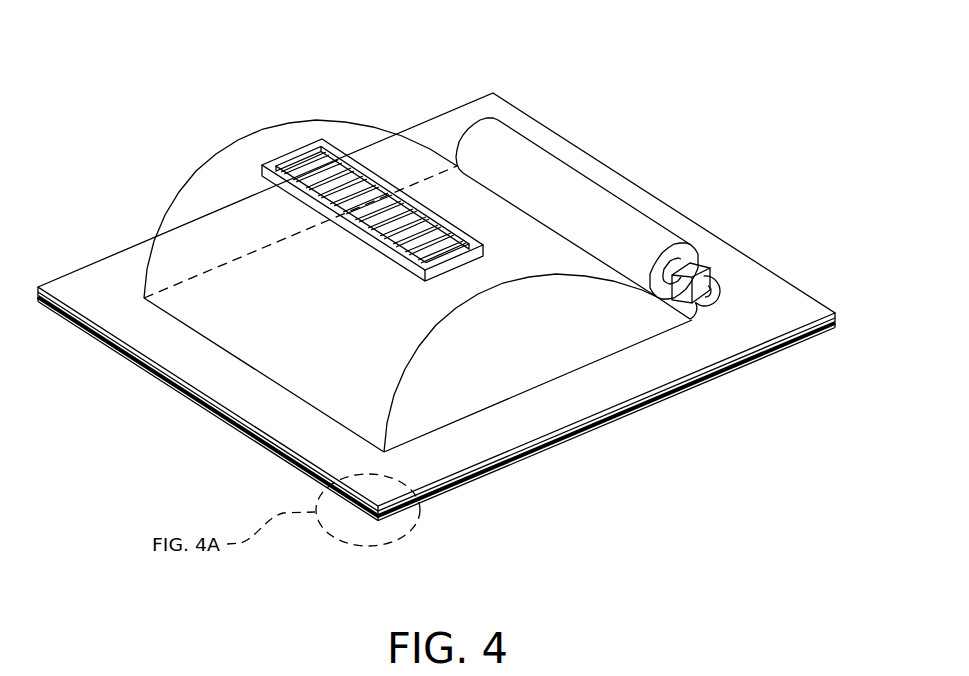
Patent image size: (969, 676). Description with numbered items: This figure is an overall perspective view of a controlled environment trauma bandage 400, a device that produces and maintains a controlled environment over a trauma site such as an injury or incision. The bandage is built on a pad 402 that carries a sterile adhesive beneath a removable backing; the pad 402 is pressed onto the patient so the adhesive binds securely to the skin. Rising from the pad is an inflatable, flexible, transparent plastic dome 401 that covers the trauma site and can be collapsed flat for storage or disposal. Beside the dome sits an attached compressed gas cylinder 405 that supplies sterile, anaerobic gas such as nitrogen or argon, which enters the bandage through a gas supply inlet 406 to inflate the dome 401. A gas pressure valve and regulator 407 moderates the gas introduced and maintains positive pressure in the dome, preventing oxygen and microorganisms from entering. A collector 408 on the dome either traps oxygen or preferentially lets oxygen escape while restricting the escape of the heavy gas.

The controlled environment trauma bandage 400 is at (338, 128).
The dome 401 is at (585, 280).
The pad 402 is at (517, 428).
The compressed gas cylinder 405 is at (610, 215).
The gas supply inlet 406 is at (712, 293).
The gas pressure valve and regulator 407 is at (703, 270).
The collector 408 is at (307, 167).